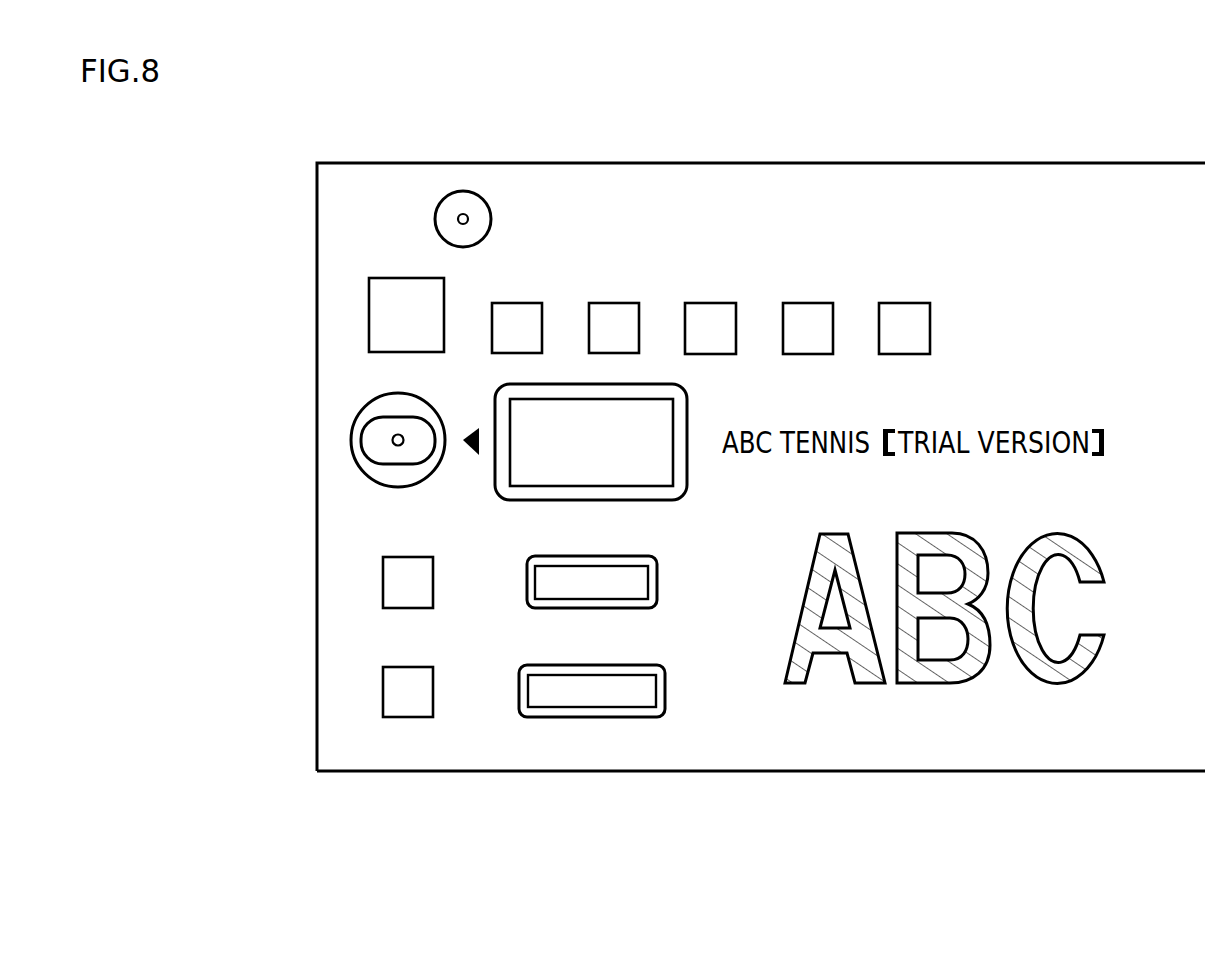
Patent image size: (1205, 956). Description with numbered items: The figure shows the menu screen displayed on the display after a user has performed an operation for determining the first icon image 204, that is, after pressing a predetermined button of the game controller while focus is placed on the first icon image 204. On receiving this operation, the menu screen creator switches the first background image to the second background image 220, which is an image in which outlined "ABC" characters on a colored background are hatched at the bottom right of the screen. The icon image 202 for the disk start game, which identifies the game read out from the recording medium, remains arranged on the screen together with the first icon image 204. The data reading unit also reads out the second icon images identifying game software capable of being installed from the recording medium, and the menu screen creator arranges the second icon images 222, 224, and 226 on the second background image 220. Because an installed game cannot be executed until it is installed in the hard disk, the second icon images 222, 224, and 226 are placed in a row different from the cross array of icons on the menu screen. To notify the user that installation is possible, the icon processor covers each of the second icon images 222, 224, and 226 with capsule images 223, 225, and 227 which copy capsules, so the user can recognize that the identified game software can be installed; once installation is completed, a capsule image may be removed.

The icon image for the disk start game 202 is at (465, 200).
The first icon image 204 is at (382, 412).
The second background image 220 is at (1025, 183).
The second icon image 222 is at (530, 462).
The capsule image 223 is at (495, 408).
The second icon image 224 is at (618, 590).
The capsule image 225 is at (658, 584).
The second icon image 226 is at (593, 703).
The capsule image 227 is at (548, 717).